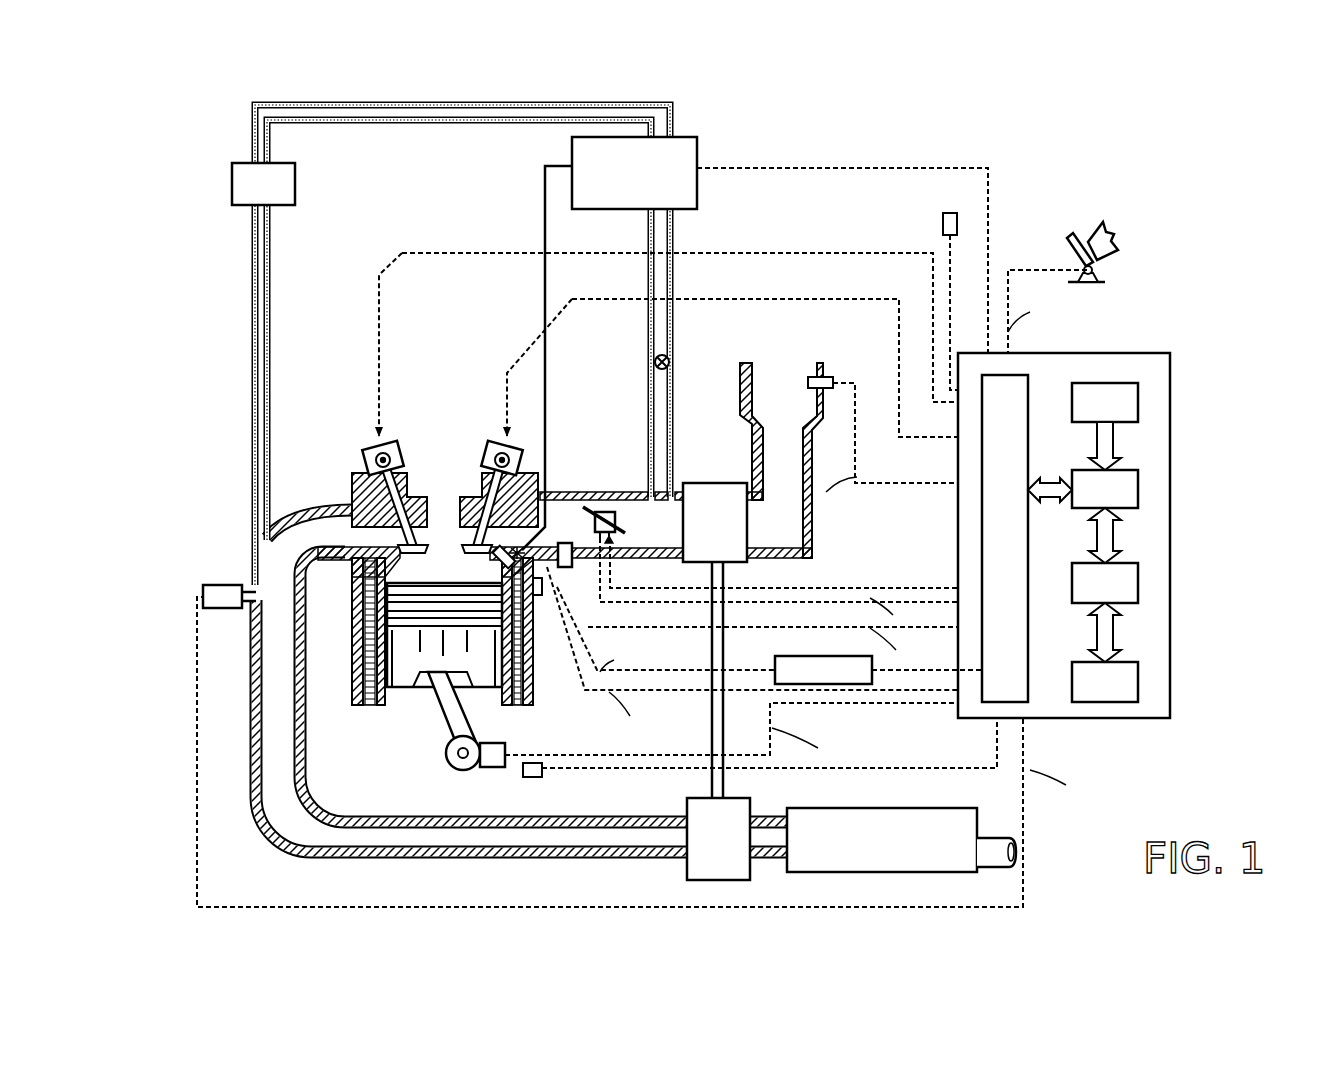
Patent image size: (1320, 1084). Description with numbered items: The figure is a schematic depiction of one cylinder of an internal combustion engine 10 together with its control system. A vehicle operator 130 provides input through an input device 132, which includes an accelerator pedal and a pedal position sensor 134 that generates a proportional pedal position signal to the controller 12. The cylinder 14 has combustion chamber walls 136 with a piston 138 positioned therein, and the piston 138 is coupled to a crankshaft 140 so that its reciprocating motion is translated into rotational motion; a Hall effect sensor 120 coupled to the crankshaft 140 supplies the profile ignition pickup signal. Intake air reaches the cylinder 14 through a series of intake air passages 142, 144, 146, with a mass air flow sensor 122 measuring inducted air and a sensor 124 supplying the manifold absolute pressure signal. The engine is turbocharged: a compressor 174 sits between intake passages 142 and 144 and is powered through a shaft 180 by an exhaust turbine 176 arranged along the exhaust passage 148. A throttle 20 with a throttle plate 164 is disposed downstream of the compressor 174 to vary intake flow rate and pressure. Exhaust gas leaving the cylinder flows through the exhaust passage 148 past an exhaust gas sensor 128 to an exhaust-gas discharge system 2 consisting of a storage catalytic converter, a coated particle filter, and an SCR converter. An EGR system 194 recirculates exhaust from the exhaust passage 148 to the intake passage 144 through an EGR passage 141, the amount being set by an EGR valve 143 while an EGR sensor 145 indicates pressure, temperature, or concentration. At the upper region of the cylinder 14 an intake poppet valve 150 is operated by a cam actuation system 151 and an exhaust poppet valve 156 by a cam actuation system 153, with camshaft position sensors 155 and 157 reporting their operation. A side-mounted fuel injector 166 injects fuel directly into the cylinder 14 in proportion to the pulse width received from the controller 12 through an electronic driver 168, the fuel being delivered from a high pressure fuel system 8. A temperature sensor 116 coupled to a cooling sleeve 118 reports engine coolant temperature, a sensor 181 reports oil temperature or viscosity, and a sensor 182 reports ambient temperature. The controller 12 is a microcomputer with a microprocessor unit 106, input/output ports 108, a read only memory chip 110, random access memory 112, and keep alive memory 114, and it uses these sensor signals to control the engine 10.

The internal combustion engine 10 is at (196, 198).
The EGR system 194 is at (733, 139).
The EGR sensor 145 is at (296, 186).
The high pressure fuel system 8 is at (780, 254).
The EGR passage 141 is at (493, 345).
The EGR valve 143 is at (669, 362).
The sensor 182 is at (943, 222).
The input device 132 is at (1072, 250).
The vehicle operator 130 is at (1110, 240).
The pedal position sensor 134 is at (1097, 272).
The controller 12 is at (1160, 353).
The input/output ports 108 is at (1028, 385).
The read only memory chip 110 is at (1138, 402).
The microprocessor unit 106 is at (1138, 490).
The random access memory 112 is at (1138, 582).
The keep alive memory 114 is at (1138, 681).
The mass air flow sensor 122 is at (826, 373).
The intake air passage 142 is at (800, 406).
The compressor 174 is at (704, 483).
The shaft 180 is at (715, 762).
The exhaust turbine 176 is at (687, 870).
The exhaust-gas discharge system 2 is at (857, 810).
The intake air passage 144 is at (671, 531).
The intake air passage 146 is at (583, 531).
The exhaust passage 148 is at (345, 541).
The throttle plate 164 is at (582, 503).
The throttle 20 is at (606, 507).
The sensor 124 is at (572, 568).
The exhaust poppet valve 156 is at (395, 543).
The intake poppet valve 150 is at (475, 545).
The camshaft position sensor 157 is at (372, 452).
The camshaft position sensor 155 is at (512, 460).
The cam actuation system 153 is at (388, 448).
The cam actuation system 151 is at (500, 450).
The fuel injector 166 is at (532, 367).
The cylinder 14 is at (366, 580).
The combustion chamber walls 136 is at (385, 706).
The piston 138 is at (428, 655).
The crankshaft 140 is at (452, 770).
The Hall effect sensor 120 is at (496, 768).
The sensor 181 is at (541, 778).
The cooling sleeve 118 is at (541, 598).
The temperature sensor 116 is at (538, 598).
The electronic driver 168 is at (777, 660).
The exhaust gas sensor 128 is at (203, 594).